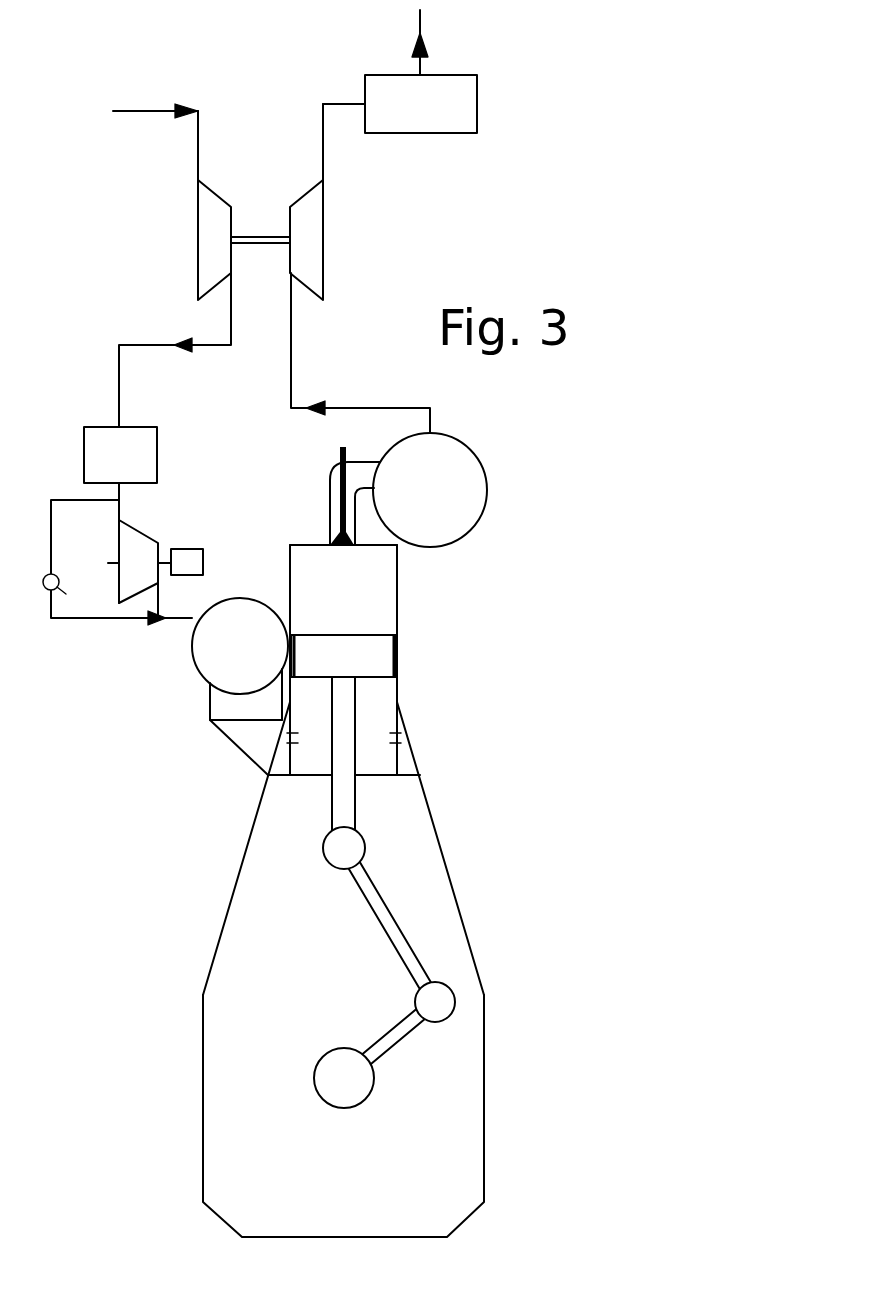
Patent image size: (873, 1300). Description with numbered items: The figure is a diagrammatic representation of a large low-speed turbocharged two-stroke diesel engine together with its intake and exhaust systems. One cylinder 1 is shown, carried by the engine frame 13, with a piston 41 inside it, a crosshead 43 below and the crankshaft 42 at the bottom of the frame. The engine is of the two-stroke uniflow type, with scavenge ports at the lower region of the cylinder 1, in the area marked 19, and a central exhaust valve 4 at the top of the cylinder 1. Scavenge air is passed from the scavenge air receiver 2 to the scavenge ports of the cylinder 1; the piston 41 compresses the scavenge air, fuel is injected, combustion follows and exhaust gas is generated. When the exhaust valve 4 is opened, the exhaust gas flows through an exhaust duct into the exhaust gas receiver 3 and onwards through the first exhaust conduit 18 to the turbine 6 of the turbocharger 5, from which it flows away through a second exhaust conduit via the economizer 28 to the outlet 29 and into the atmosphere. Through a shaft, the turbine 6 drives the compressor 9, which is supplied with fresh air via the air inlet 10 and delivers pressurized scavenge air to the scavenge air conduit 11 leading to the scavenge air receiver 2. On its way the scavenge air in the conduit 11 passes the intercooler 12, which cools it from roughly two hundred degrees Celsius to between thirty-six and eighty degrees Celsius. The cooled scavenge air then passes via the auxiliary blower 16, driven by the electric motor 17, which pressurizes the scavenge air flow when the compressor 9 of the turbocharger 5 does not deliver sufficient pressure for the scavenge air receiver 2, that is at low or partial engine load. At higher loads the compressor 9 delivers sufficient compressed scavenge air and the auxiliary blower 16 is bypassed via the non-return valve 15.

The cylinder 1 is at (410, 592).
The scavenge air receiver 2 is at (193, 668).
The exhaust gas receiver 3 is at (473, 530).
The exhaust valve 4 is at (338, 505).
The turbocharger 5 is at (182, 178).
The turbine 6 is at (325, 245).
The compressor 9 is at (196, 205).
The air inlet 10 is at (200, 140).
The scavenge air conduit 11 is at (117, 376).
The intercooler 12 is at (120, 455).
The engine frame 13 is at (258, 890).
The non-return valve 15 is at (41, 576).
The auxiliary blower 16 is at (118, 573).
The electric motor 17 is at (188, 547).
The first exhaust conduit 18 is at (357, 410).
The piston ring / scavenge port 19 is at (278, 735).
The economizer 28 is at (421, 104).
The outlet 29 is at (418, 62).
The piston 41 is at (385, 653).
The crankshaft 42 is at (393, 1040).
The crosshead 43 is at (347, 848).